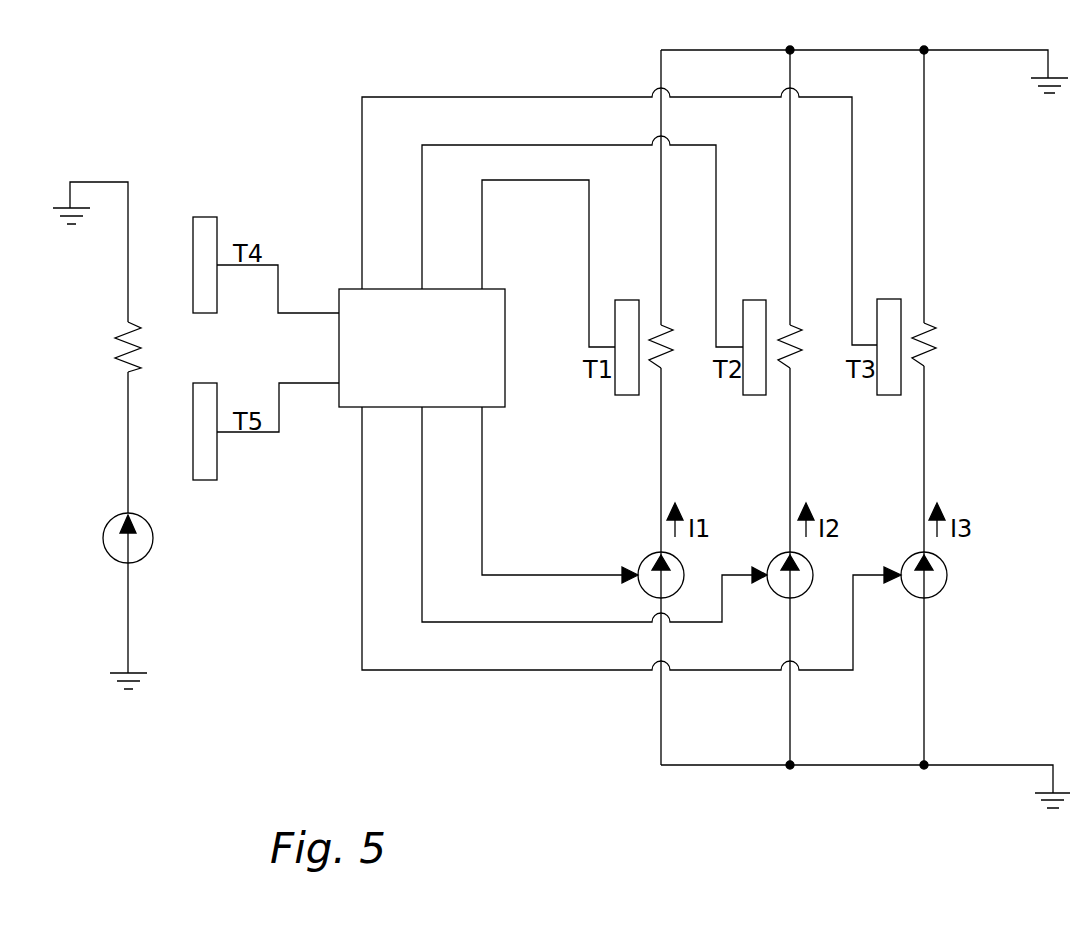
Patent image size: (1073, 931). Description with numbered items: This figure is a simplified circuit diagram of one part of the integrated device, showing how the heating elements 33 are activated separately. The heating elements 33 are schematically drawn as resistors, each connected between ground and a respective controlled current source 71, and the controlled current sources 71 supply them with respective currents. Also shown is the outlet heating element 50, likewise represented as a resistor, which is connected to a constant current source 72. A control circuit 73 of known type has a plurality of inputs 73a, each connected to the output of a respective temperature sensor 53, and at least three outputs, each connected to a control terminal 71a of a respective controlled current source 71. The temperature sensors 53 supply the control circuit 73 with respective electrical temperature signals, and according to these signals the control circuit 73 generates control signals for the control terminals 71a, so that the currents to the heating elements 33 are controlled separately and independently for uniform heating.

The heating element 33 is at (668, 337).
The outlet heating element 50 is at (115, 344).
The temperature sensor 53 is at (203, 223).
The controlled current source 71 is at (650, 590).
The control terminal 71a is at (613, 573).
The constant current source 72 is at (150, 548).
The control circuit 73 is at (487, 388).
The input 73a is at (298, 313).